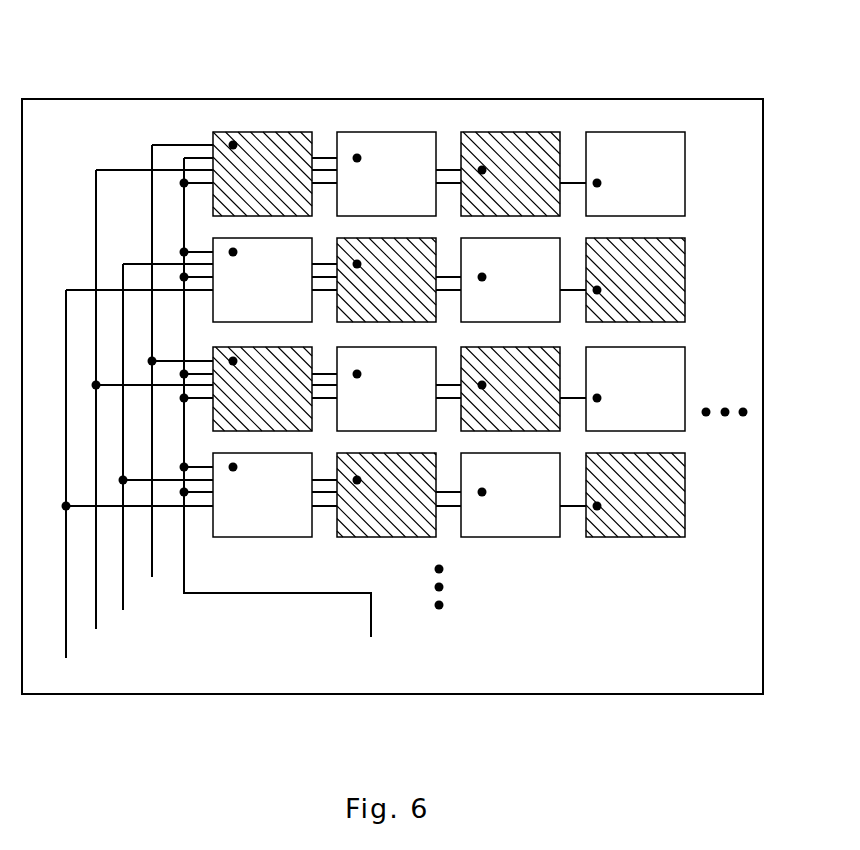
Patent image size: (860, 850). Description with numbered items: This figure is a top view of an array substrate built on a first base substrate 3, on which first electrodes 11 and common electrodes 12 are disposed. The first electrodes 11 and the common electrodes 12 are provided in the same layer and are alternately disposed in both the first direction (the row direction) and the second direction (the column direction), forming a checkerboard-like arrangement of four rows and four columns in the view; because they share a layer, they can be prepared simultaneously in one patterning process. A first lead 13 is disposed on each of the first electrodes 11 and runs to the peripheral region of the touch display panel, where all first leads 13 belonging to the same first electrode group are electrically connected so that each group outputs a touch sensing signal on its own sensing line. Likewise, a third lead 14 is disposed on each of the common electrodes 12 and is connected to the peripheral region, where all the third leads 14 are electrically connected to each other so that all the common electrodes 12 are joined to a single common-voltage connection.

The first base substrate 3 is at (745, 260).
The first electrode 11 is at (270, 132).
The common electrode 12 is at (393, 132).
The first lead 13 is at (195, 128).
The third lead 14 is at (325, 142).